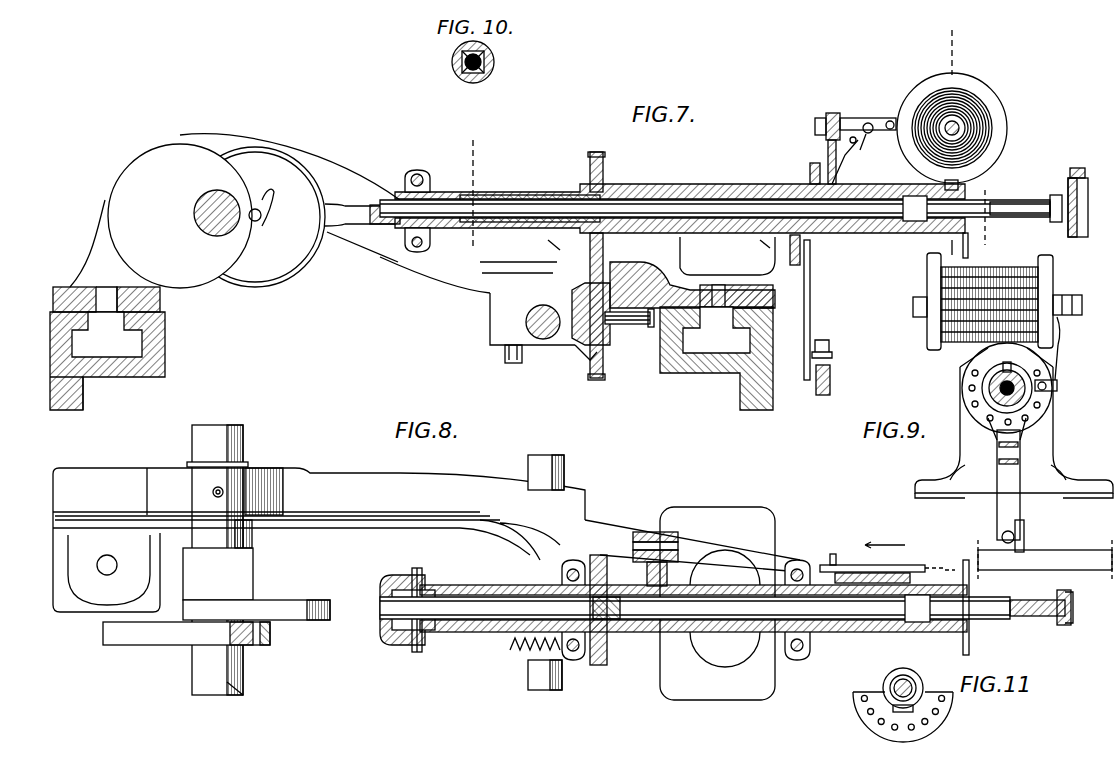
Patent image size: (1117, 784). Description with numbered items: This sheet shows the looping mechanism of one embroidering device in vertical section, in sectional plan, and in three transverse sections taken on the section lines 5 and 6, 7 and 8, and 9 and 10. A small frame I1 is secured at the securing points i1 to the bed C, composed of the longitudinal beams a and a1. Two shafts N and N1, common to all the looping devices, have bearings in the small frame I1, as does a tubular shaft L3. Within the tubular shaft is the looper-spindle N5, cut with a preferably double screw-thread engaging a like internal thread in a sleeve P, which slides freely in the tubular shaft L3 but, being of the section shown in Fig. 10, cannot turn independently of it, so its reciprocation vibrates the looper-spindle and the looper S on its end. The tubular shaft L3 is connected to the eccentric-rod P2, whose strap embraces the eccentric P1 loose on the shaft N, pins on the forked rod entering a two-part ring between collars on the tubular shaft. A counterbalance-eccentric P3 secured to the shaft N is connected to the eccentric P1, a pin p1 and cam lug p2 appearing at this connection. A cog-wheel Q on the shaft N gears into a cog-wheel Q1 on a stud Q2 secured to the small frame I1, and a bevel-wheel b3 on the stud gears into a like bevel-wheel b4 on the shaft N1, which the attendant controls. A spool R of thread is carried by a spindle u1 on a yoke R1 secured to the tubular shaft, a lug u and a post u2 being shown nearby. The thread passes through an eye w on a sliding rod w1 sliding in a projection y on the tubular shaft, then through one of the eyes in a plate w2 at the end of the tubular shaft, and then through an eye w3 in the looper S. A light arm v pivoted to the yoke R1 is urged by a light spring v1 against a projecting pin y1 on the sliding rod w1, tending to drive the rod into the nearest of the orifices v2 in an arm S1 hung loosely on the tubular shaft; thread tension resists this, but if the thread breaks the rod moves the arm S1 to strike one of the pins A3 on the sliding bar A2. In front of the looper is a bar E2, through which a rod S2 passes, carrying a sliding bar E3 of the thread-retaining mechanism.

In FIG. 7, the bed C is at (42, 316).
In FIG. 7, the longitudinal beam a is at (73, 393).
In FIG. 7, the longitudinal beam a1 is at (716, 358).
In FIG. 7, the securing point i1 is at (162, 301).
In FIG. 7, the small frame I1 is at (602, 272).
In FIG. 8, the small frame I1 is at (431, 564).
In FIG. 10, the sleeve P is at (494, 62).
In FIG. 7, the sleeve P is at (435, 192).
In FIG. 8, the sleeve P is at (593, 608).
In FIG. 7, the eccentric P1 is at (255, 217).
In FIG. 8, the eccentric P1 is at (292, 622).
In FIG. 7, the eccentric-rod P2 is at (362, 212).
In FIG. 8, the eccentric-rod P2 is at (330, 608).
In FIG. 7, the counterbalance-eccentric P3 is at (180, 216).
In FIG. 8, the counterbalance-eccentric P3 is at (186, 633).
In FIG. 7, the pin p1 is at (262, 222).
In FIG. 7, the cam lug p2 is at (274, 190).
In FIG. 8, the cam lug p2 is at (255, 630).
In FIG. 7, the shaft N is at (217, 213).
In FIG. 8, the shaft N is at (217, 560).
In FIG. 7, the shaft N1 is at (532, 328).
In FIG. 8, the shaft N1 is at (546, 582).
In FIG. 10, the looper-spindle N5 is at (468, 70).
In FIG. 7, the looper-spindle N5 is at (715, 198).
In FIG. 8, the looper-spindle N5 is at (695, 608).
In FIG. 11, the looper-spindle N5 is at (906, 680).
In FIG. 10, the tubular shaft L3 is at (452, 62).
In FIG. 7, the tubular shaft L3 is at (680, 195).
In FIG. 8, the tubular shaft L3 is at (478, 585).
In FIG. 11, the tubular shaft L3 is at (885, 680).
In FIG. 7, the cog-wheel Q is at (603, 165).
In FIG. 8, the cog-wheel Q is at (607, 652).
In FIG. 7, the cog-wheel Q1 is at (603, 358).
In FIG. 7, the stud Q2 is at (613, 314).
In FIG. 7, the bevel-wheel b3 is at (575, 350).
In FIG. 8, the bevel-wheel b4 is at (510, 650).
In FIG. 7, the lug u is at (656, 245).
In FIG. 7, the spindle u1 is at (960, 120).
In FIG. 7, the post u2 is at (802, 164).
In FIG. 7, the light arm v is at (848, 160).
In FIG. 9, the light arm v is at (1062, 360).
In FIG. 7, the light spring v1 is at (873, 146).
In FIG. 9, the light spring v1 is at (1073, 330).
In FIG. 9, the orifices v2 is at (969, 388).
In FIG. 9, the eye w is at (1057, 383).
In FIG. 8, the eye w is at (933, 562).
In FIG. 8, the sliding rod w1 is at (850, 573).
In FIG. 7, the plate w2 is at (968, 250).
In FIG. 8, the plate w2 is at (969, 640).
In FIG. 11, the plate w2 is at (897, 722).
In FIG. 8, the eye w3 is at (1073, 595).
In FIG. 7, the spool R is at (1008, 128).
In FIG. 9, the spool R is at (983, 301).
In FIG. 7, the yoke R1 is at (855, 140).
In FIG. 9, the yoke R1 is at (1067, 294).
In FIG. 7, the looper S is at (1045, 195).
In FIG. 8, the looper S is at (1049, 607).
In FIG. 9, the arm S1 is at (1008, 485).
In FIG. 7, the rod S2 is at (817, 310).
In FIG. 7, the bar E2 is at (1085, 237).
In FIG. 7, the sliding bar E3 is at (1082, 168).
In FIG. 7, the sliding bar A2 is at (830, 380).
In FIG. 8, the sliding bar A2 is at (1045, 555).
In FIG. 7, the pins A3 is at (832, 348).
In FIG. 8, the pins A3 is at (1024, 530).
In FIG. 8, the projection y is at (880, 565).
In FIG. 8, the projecting pin y1 is at (833, 554).
In FIG. 7, the section line 5 is at (950, 43).
In FIG. 7, the section line 6 is at (949, 249).
In FIG. 7, the section line 7 is at (470, 185).
In FIG. 7, the section line 8 is at (511, 264).
In FIG. 7, the section line 9 is at (984, 208).
In FIG. 7, the section line 10 is at (984, 238).